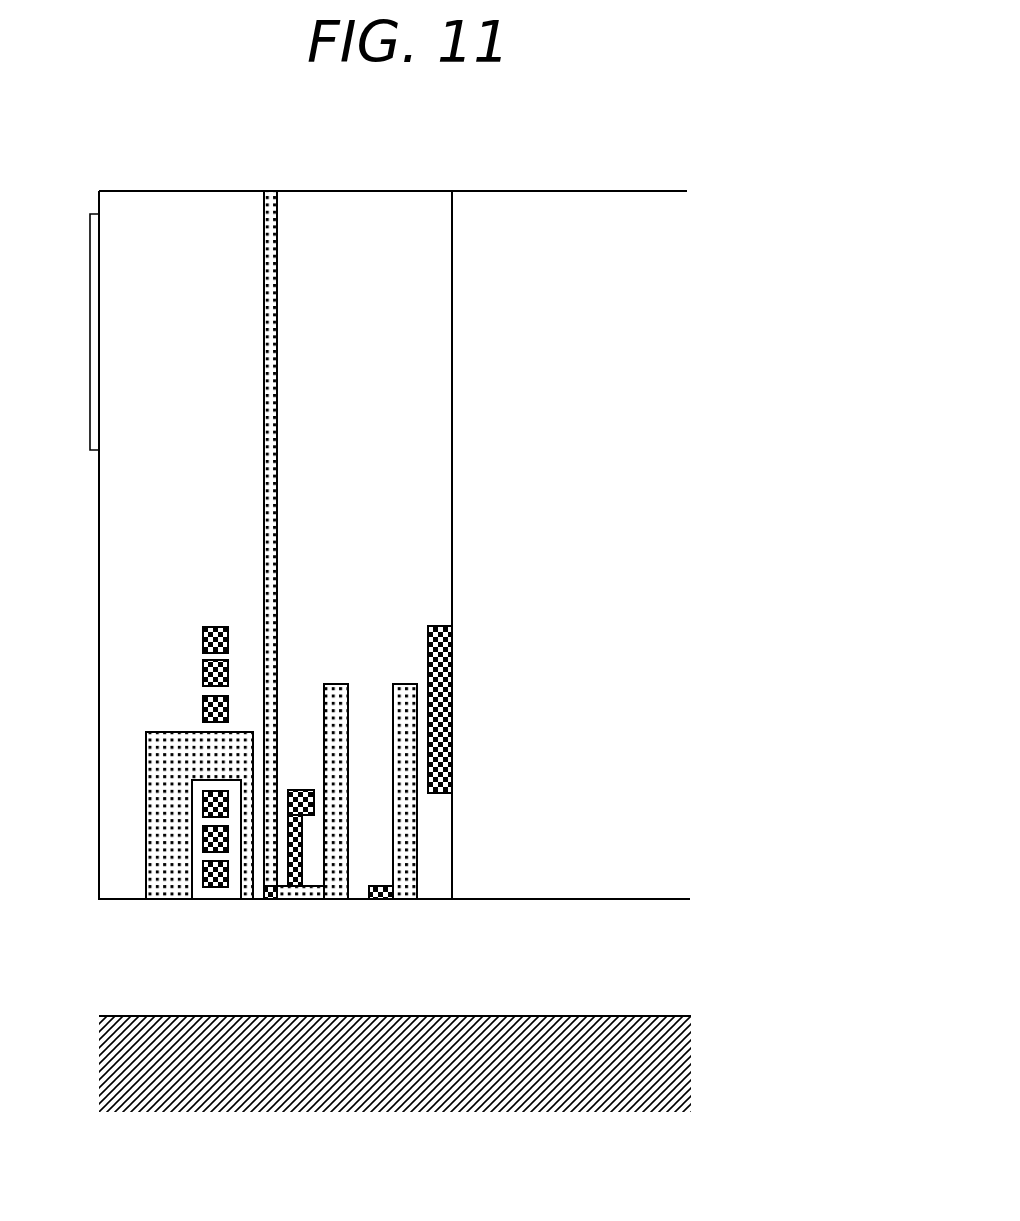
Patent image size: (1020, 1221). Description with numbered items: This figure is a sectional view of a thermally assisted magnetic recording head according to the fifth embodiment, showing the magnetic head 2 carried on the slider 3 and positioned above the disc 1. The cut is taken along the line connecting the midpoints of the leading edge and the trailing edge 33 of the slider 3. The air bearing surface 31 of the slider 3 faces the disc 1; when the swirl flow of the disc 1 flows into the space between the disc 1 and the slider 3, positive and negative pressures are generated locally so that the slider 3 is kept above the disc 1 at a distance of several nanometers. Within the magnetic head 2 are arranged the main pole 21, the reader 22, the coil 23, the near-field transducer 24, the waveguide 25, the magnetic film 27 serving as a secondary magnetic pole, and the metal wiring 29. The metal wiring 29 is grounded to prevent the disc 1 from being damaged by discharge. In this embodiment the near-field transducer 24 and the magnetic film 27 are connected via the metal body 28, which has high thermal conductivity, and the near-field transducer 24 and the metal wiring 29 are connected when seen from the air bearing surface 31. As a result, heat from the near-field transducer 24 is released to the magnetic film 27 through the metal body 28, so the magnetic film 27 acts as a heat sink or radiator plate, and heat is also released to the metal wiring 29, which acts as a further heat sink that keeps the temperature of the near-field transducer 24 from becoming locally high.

The disc 1 is at (388, 1103).
The magnetic head 2 is at (99, 519).
The slider 3 is at (567, 200).
The main pole 21 is at (247, 900).
The reader 22 is at (380, 900).
The coil 23 is at (203, 638).
The near-field transducer 24 is at (271, 900).
The waveguide 25 is at (269, 192).
The magnetic film (secondary magnetic pole) 27 is at (337, 900).
The metal body 28 is at (344, 547).
The metal wiring 29 is at (301, 790).
The air bearing surface 31 is at (566, 900).
The trailing edge 33 is at (99, 899).